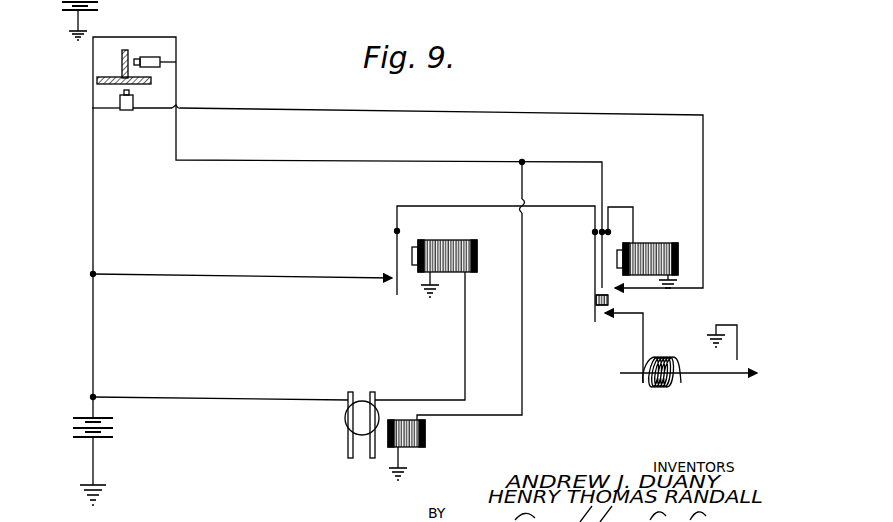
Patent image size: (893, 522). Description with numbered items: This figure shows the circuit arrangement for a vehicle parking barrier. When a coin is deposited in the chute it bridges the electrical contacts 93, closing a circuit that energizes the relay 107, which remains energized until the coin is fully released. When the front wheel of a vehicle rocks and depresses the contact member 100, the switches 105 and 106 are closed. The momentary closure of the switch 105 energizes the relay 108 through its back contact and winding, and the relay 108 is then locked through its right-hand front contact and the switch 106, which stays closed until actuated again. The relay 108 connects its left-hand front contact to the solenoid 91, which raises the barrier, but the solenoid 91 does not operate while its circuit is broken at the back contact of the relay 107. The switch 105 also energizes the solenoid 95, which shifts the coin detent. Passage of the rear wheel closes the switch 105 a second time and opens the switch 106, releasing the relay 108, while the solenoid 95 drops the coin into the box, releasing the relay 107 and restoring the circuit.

The contact member 100 is at (122, 72).
The switch 105 is at (152, 60).
The switch 106 is at (128, 113).
The relay 107 is at (459, 246).
The relay 108 is at (661, 243).
The solenoid 91 is at (678, 359).
The electrical contacts 93 is at (352, 392).
The solenoid 95 is at (414, 432).